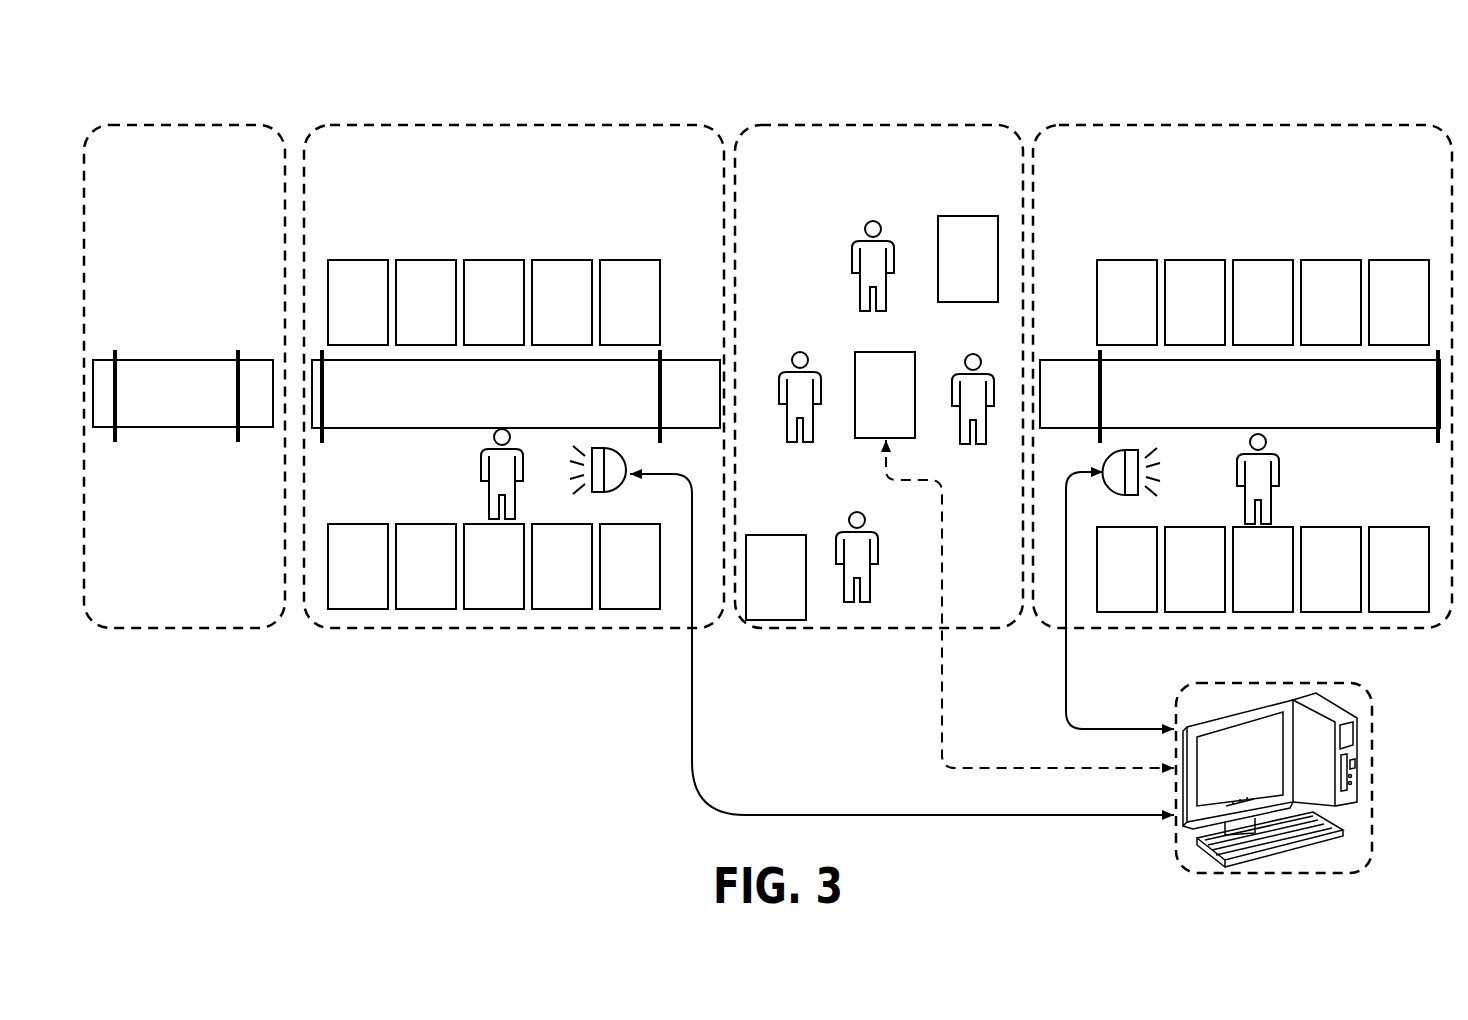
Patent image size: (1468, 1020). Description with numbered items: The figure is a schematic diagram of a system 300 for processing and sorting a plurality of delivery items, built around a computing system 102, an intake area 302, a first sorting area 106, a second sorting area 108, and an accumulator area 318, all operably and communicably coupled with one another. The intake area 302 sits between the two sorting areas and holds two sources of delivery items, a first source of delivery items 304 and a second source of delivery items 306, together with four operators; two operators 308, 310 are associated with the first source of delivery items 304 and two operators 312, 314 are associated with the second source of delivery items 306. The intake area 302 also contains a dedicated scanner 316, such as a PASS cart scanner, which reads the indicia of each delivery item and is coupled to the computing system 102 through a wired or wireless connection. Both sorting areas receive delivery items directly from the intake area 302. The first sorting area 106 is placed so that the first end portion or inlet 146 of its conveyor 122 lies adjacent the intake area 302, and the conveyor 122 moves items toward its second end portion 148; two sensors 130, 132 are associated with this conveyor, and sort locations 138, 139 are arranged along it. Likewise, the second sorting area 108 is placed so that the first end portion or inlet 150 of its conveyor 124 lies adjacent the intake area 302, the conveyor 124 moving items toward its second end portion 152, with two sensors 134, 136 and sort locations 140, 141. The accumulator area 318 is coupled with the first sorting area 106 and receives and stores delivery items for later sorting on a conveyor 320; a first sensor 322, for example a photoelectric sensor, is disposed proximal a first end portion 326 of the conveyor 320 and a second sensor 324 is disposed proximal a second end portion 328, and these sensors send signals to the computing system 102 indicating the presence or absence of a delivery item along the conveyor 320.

The system 300 is at (224, 73).
The computing system 102 is at (1372, 768).
The first sorting area 106 is at (498, 124).
The second sorting area 108 is at (1210, 124).
The first conveyor 122 is at (518, 403).
The second conveyor 124 is at (1278, 403).
The sensor 130 is at (663, 407).
The sensor 132 is at (325, 408).
The sensor 134 is at (1103, 408).
The sensor 136 is at (1436, 406).
The sort locations 138 is at (648, 315).
The sort locations 139 is at (648, 579).
The sort locations 140 is at (1417, 315).
The sort locations 141 is at (1417, 582).
The first end portion 146 is at (688, 356).
The second end portion 148 is at (351, 440).
The first end portion 150 is at (1062, 356).
The second end portion 152 is at (1409, 440).
The intake area 302 is at (880, 124).
The first source of delivery items 304 is at (986, 271).
The second source of delivery items 306 is at (794, 590).
The operator 308 is at (862, 238).
The operator 310 is at (963, 372).
The operator 312 is at (849, 532).
The operator 314 is at (789, 370).
The dedicated scanner 316 is at (903, 407).
The accumulator area 318 is at (170, 630).
The conveyor 320 is at (201, 403).
The first sensor 322 is at (237, 420).
The second sensor 324 is at (118, 372).
The first end portion 326 is at (262, 350).
The second end portion 328 is at (108, 442).